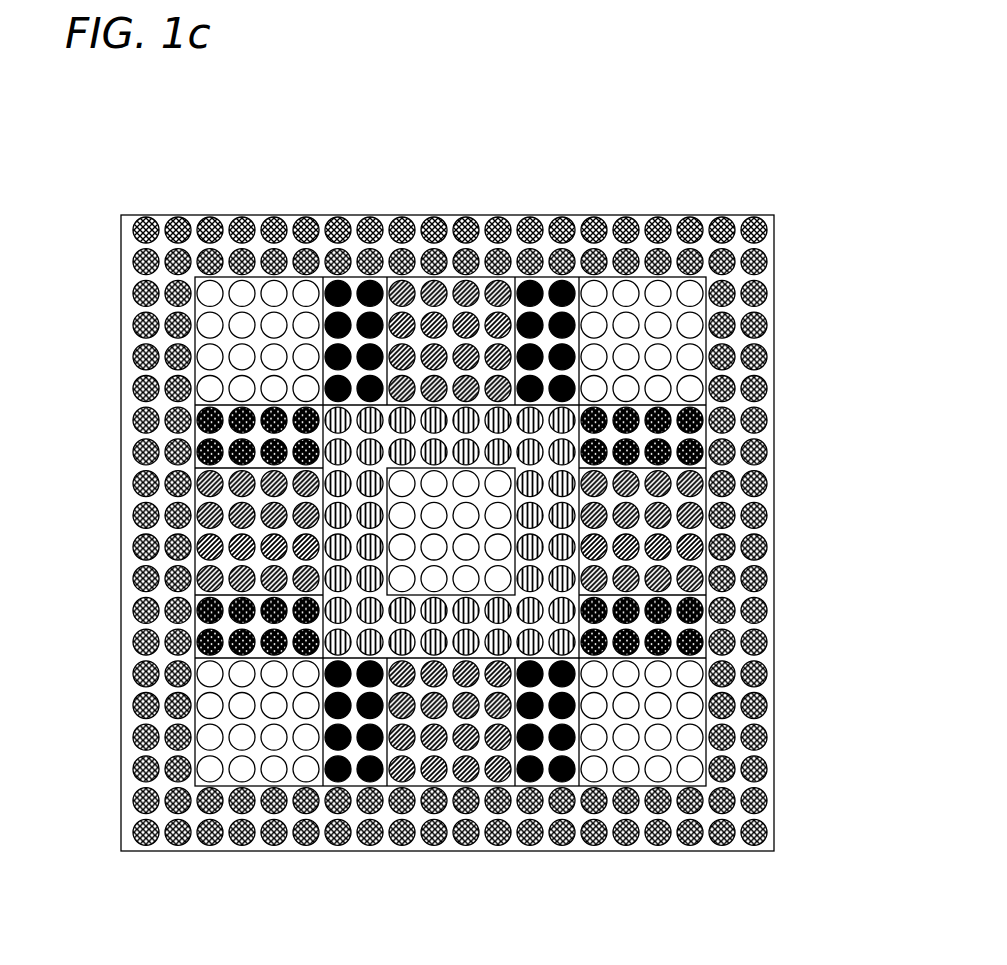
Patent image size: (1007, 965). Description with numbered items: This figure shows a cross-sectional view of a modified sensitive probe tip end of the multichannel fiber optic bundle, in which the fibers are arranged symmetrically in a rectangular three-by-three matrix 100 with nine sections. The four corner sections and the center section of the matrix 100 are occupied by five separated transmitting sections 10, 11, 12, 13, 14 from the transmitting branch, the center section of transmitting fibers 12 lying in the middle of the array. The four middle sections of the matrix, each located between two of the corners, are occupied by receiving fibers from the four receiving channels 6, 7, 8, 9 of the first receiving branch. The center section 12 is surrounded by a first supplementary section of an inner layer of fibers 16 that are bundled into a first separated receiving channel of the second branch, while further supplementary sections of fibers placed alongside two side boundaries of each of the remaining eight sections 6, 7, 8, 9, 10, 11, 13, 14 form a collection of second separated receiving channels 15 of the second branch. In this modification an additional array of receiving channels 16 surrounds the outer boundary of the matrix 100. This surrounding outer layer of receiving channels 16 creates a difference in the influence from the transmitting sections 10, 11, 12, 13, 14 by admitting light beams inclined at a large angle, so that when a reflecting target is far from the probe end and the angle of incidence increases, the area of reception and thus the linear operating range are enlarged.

The rectangular 3*3 matrix 100 is at (758, 147).
The receiving channel 6 is at (455, 302).
The receiving channel 7 is at (487, 758).
The receiving channel 8 is at (202, 533).
The receiving channel 9 is at (693, 535).
The transmitting section 10 is at (233, 308).
The transmitting section 11 is at (698, 308).
The center section of transmitting fibers 12 is at (515, 537).
The transmitting section 13 is at (230, 725).
The transmitting section 14 is at (683, 752).
The second separated receiving channels 15 is at (358, 288).
The receiving channels 16 is at (137, 275).